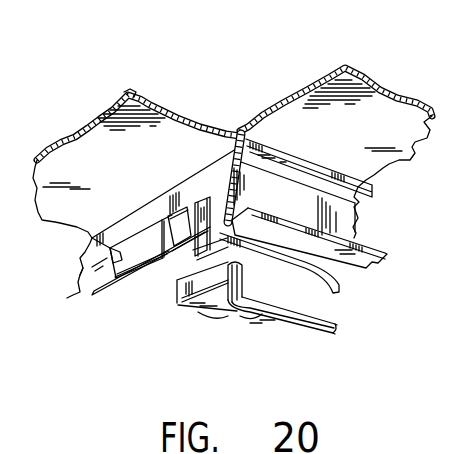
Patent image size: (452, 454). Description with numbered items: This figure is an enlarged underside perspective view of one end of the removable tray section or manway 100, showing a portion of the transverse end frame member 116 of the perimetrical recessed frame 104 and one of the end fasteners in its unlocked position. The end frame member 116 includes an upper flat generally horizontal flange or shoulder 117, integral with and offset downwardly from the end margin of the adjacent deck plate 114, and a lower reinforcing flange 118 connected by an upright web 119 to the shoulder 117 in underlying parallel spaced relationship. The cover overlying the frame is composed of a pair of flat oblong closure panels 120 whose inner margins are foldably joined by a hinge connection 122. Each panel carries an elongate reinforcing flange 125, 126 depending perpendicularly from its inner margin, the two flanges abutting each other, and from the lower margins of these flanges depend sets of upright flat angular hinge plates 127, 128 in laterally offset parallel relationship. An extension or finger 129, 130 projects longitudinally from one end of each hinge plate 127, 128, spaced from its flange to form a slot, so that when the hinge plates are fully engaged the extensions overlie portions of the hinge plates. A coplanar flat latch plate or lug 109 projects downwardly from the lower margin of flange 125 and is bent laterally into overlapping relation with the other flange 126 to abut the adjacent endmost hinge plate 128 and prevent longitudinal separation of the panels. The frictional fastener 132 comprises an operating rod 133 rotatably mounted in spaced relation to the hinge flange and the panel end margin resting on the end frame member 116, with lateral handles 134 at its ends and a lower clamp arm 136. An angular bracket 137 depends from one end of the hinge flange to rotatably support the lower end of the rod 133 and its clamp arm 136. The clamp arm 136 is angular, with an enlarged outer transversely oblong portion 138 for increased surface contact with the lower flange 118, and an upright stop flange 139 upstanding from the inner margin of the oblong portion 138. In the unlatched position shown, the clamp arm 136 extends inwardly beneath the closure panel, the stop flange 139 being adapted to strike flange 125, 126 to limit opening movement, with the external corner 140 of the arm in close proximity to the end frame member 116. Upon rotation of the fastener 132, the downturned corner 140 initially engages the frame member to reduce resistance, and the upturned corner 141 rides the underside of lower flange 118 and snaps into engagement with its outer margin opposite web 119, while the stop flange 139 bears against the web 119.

The removable tray section or manway 100 is at (124, 88).
The perimetrical recessed frame 104 is at (300, 148).
The latch plate or lug 109 is at (163, 230).
The deck plate 114 is at (348, 66).
The transverse end frame member 116 is at (222, 162).
The upper flat horizontal flange or shoulder 117 is at (272, 158).
The lower reinforcing flange 118 is at (384, 262).
The upright web 119 is at (357, 216).
The closure member or panel 120 is at (147, 98).
The hinge connection 122 is at (136, 190).
The reinforcing flange 125 is at (112, 222).
The reinforcing flange 126 is at (179, 214).
The angular hinge plate 127 is at (78, 292).
The angular hinge plate 128 is at (92, 240).
The extension or finger 129 is at (160, 260).
The extension or finger 130 is at (113, 283).
The frictional fastener 132 is at (314, 319).
The operating rod 133 is at (243, 280).
The lateral arm or handle 134 is at (340, 327).
The lower clamp arm or member 136 is at (306, 288).
The angular bracket 137 is at (199, 250).
The enlarged outer transversely oblong portion 138 is at (200, 313).
The upright stop element or flange 139 is at (178, 304).
The external corner 140 is at (342, 289).
The corner 141 is at (248, 318).